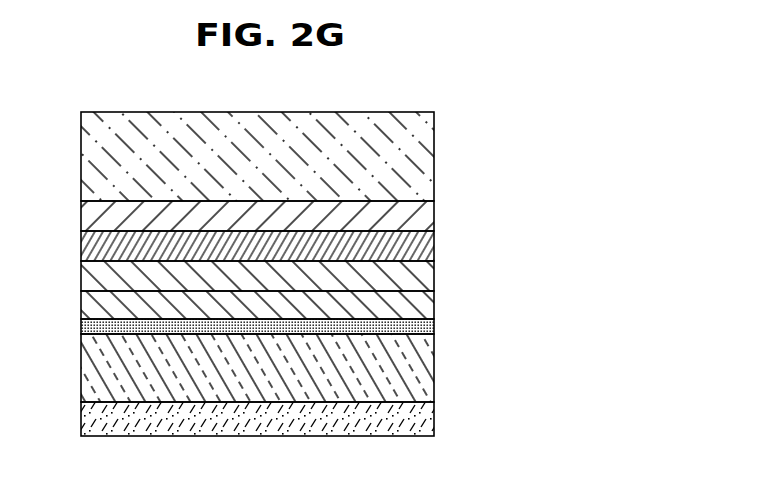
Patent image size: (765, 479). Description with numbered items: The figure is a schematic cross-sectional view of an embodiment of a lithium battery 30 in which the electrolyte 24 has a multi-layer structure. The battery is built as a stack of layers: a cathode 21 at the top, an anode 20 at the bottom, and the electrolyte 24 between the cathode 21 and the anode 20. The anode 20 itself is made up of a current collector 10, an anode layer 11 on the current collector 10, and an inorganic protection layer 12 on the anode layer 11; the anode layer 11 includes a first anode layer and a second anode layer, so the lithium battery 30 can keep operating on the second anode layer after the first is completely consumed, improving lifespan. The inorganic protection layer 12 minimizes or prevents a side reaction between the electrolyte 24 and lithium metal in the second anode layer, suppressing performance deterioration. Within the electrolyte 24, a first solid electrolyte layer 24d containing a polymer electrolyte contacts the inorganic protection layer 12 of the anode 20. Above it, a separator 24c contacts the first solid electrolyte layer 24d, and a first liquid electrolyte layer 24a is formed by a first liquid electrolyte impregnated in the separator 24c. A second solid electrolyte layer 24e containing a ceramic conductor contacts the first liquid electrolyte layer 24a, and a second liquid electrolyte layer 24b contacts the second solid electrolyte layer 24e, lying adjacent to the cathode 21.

The current collector 10 is at (294, 419).
The anode layer 11 is at (423, 374).
The inorganic protection layer 12 is at (423, 332).
The anode 20 is at (323, 377).
The cathode 21 is at (423, 166).
The electrolyte 24 is at (345, 260).
The first liquid electrolyte layer 24a is at (317, 276).
The second liquid electrolyte layer 24b is at (423, 219).
The separator 24c is at (423, 276).
The first solid electrolyte layer 24d is at (423, 307).
The second solid electrolyte layer 24e is at (423, 247).
The lithium battery 30 is at (373, 274).